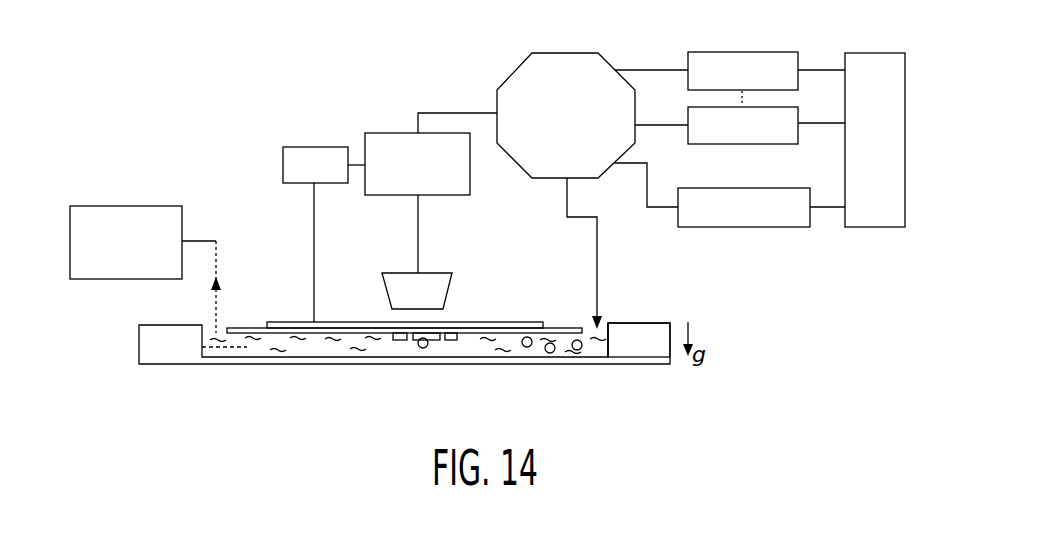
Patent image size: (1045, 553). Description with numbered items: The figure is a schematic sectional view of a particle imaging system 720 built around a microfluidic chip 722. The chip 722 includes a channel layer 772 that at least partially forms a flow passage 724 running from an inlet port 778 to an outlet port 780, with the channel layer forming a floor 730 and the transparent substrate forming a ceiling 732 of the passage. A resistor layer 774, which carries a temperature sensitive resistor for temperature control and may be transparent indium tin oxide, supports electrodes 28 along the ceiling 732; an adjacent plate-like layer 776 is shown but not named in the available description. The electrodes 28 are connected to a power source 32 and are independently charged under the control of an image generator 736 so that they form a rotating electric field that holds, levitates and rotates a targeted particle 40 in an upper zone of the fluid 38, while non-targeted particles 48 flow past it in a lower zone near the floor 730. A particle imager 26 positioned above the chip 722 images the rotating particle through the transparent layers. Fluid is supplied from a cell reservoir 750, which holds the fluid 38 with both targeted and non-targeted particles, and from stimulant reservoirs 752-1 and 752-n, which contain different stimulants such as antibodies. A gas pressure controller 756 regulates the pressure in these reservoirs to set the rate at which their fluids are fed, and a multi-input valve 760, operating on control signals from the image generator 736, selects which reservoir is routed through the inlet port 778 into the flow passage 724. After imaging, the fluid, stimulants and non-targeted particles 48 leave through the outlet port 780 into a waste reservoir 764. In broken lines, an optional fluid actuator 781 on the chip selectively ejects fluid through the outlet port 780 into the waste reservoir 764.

The particle imaging system 720 is at (184, 96).
The multi-input valve 760 is at (567, 53).
The stimulant reservoir 752-1 is at (740, 52).
The stimulant reservoir 752-n is at (717, 144).
The gas pressure controller 756 is at (873, 227).
The cell reservoir 750 is at (752, 227).
The image generator 736 is at (388, 133).
The power source 32 is at (283, 165).
The waste reservoir 764 is at (70, 242).
The outlet port 780 is at (225, 327).
The inlet port 778 is at (607, 323).
The particle imager 26 is at (448, 292).
The resistor layer 774 is at (279, 322).
The lower plate 776 is at (570, 327).
The microfluidic chip 722 is at (135, 324).
The fluid actuator 781 is at (216, 355).
The channel layer 772 is at (648, 332).
The fluid 38 is at (590, 338).
The ceiling 732 is at (248, 338).
The flow passage 724 is at (282, 347).
The floor 730 is at (337, 347).
The electrodes 28 is at (453, 340).
The targeted particle 40 is at (430, 347).
The non-targeted particles 48 is at (550, 355).